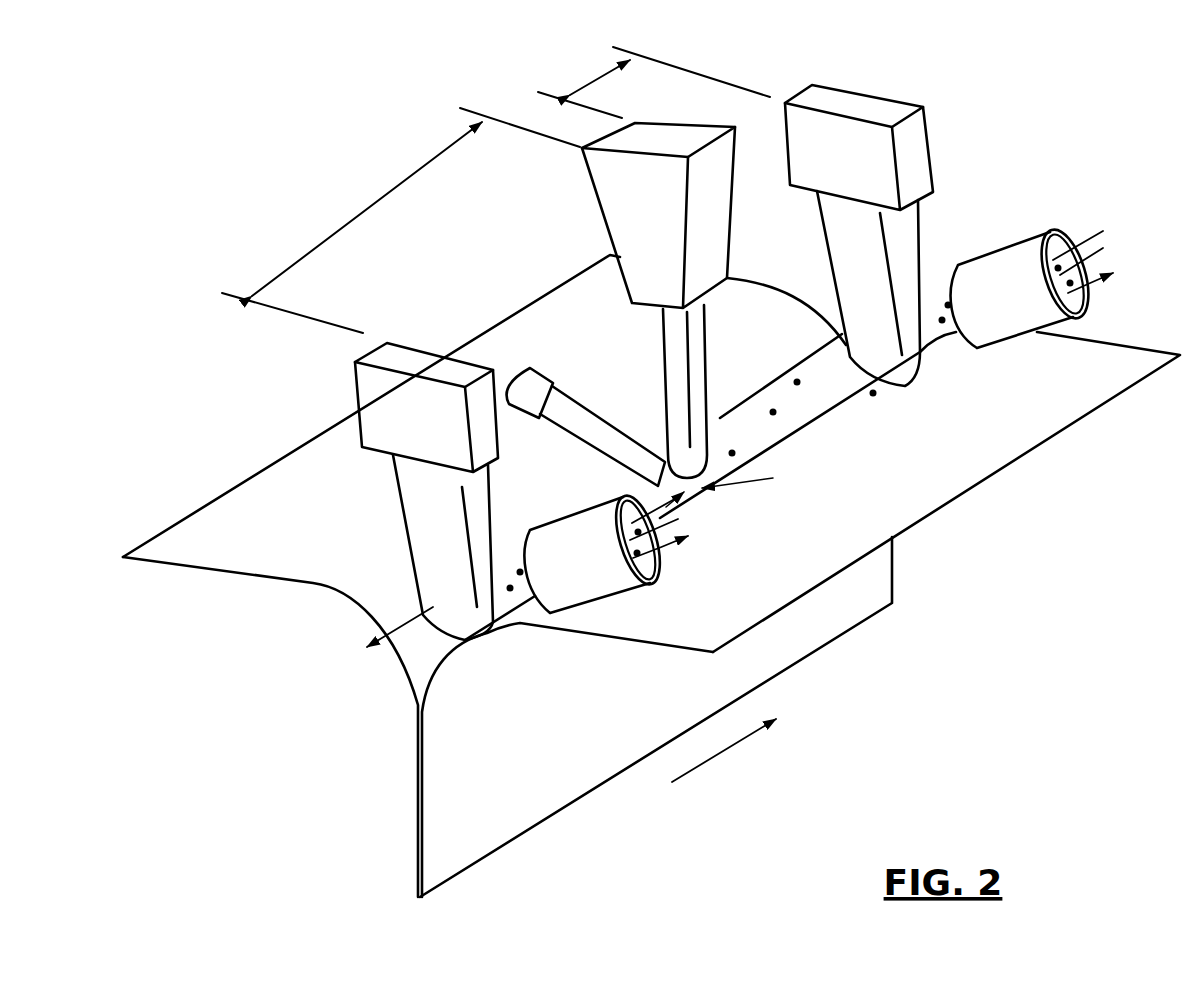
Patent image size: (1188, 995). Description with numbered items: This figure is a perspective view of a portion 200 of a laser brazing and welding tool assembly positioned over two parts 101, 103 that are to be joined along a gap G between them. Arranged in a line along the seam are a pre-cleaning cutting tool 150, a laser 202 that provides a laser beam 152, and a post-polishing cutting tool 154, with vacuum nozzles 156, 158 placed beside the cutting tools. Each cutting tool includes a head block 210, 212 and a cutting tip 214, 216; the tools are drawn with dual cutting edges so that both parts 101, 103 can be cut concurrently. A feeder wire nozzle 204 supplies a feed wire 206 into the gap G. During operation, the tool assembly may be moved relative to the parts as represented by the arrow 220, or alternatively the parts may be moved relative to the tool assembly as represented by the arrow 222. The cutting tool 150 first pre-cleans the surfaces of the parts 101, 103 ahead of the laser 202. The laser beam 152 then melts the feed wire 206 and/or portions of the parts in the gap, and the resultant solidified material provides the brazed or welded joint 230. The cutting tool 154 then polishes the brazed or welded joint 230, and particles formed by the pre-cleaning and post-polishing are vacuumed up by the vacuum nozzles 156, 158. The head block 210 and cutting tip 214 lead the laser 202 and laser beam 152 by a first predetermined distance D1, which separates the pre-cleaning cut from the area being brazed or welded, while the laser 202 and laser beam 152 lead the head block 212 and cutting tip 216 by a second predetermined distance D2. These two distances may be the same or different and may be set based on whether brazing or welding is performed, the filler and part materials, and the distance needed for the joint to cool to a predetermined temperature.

The portion of the laser brazing and welding tool assembly 200 is at (342, 79).
The part 101 is at (340, 447).
The part 103 is at (962, 490).
The pre-cleaning cutting tool 150 is at (410, 446).
The laser beam 152 is at (663, 363).
The post-polishing cutting tool 154 is at (824, 201).
The vacuum nozzle 156 is at (587, 522).
The vacuum nozzle 158 is at (1017, 265).
The laser 202 is at (613, 175).
The feeder wire nozzle 204 is at (557, 370).
The feed wire 206 is at (582, 442).
The head block 210 is at (427, 362).
The head block 212 is at (790, 100).
The cutting tip 214 is at (443, 605).
The cutting tip 216 is at (858, 350).
The arrow 220 is at (378, 652).
The arrow 222 is at (715, 752).
The brazed or welded joint 230 is at (778, 428).
The gap G is at (773, 478).
The first predetermined distance D1 is at (401, 220).
The second predetermined distance D2 is at (654, 82).